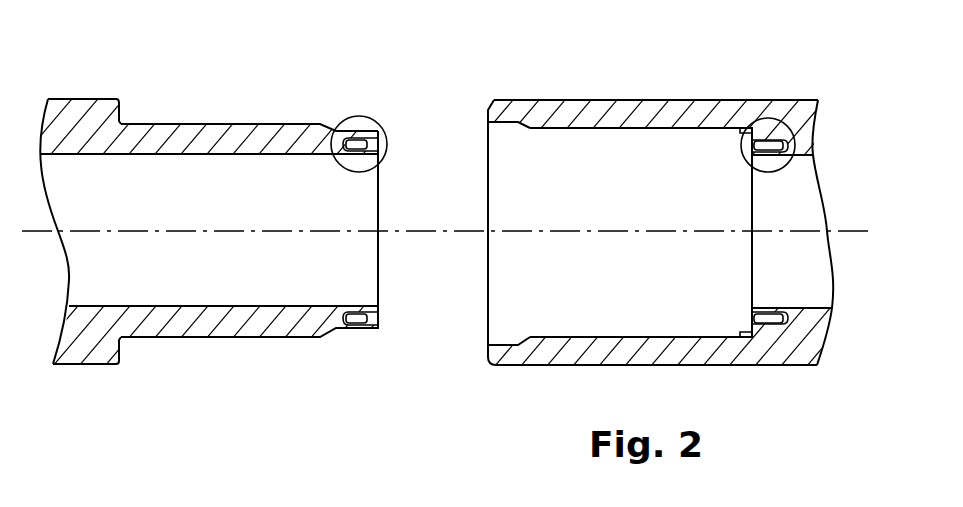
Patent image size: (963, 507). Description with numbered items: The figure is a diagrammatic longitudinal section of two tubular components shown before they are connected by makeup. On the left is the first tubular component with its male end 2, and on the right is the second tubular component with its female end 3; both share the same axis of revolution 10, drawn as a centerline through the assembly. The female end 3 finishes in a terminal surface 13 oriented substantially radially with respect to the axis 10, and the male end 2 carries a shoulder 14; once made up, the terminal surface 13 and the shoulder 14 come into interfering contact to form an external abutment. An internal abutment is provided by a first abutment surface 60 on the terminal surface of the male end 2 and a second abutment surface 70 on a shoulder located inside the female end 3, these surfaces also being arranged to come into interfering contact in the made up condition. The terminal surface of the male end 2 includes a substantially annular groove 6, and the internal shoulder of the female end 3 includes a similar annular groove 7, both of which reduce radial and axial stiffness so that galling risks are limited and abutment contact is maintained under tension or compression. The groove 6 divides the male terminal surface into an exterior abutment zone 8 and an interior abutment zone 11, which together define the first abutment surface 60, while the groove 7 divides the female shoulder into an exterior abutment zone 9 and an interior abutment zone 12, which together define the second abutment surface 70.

The male end 2 is at (193, 142).
The female end 3 is at (617, 120).
The recess 6 is at (357, 135).
The recess 7 is at (765, 140).
The exterior abutment zone 8 is at (378, 136).
The exterior abutment zone 9 is at (750, 136).
The axis of revolution 10 is at (405, 231).
The interior abutment zone 11 is at (378, 152).
The interior abutment zone 12 is at (742, 148).
The terminal surface 13 is at (488, 110).
The shoulder 14 is at (118, 112).
The first abutment surface 60 is at (462, 62).
The second abutment surface 70 is at (675, 143).